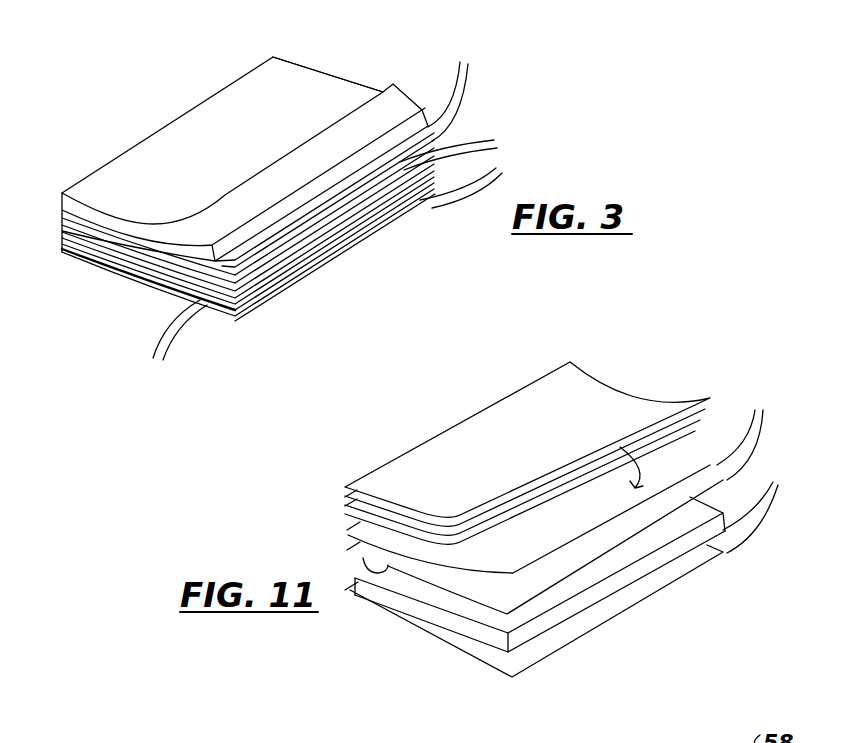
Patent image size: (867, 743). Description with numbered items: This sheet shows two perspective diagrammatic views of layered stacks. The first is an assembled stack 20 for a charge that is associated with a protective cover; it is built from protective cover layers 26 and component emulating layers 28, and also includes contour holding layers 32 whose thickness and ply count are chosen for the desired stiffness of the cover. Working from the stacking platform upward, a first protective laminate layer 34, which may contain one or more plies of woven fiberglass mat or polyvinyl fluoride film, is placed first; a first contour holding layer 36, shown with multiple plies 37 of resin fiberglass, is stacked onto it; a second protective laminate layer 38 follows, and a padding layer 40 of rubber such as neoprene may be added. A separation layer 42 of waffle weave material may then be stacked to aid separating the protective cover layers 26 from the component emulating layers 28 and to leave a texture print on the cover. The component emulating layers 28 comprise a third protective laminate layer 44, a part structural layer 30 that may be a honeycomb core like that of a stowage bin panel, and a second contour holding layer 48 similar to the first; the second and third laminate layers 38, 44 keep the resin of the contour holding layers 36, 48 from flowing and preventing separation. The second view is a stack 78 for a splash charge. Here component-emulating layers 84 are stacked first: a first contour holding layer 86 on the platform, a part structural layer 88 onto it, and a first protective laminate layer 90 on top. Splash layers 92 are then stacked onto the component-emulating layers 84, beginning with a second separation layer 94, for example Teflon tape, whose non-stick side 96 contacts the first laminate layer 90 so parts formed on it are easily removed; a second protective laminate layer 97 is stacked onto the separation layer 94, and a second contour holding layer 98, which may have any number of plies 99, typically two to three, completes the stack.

In FIG. 3, the assembled stack 20 is at (172, 120).
In FIG. 3, the protective cover layers 26 is at (494, 142).
In FIG. 3, the component emulating layers 28 is at (394, 85).
In FIG. 3, the part structural layer 30 is at (160, 250).
In FIG. 3, the contour holding layers 32 is at (295, 83).
In FIG. 3, the first protective laminate layer 34 is at (357, 250).
In FIG. 3, the first contour holding layer 36 is at (260, 303).
In FIG. 3, the plies 37 is at (297, 283).
In FIG. 3, the second protective laminate layer 38 is at (322, 227).
In FIG. 3, the padding layer 40 is at (373, 180).
In FIG. 3, the separation layer 42 is at (424, 203).
In FIG. 3, the third protective laminate layer 44 is at (230, 263).
In FIG. 3, the second contour holding layer 48 is at (80, 208).
In FIG. 11, the stack 78 is at (485, 408).
In FIG. 11, the component-emulating layers 84 is at (745, 478).
In FIG. 11, the first contour holding layer 86 is at (703, 568).
In FIG. 11, the part structural layer 88 is at (633, 577).
In FIG. 11, the first protective laminate layer 90 is at (560, 602).
In FIG. 11, the splash layers 92 is at (713, 397).
In FIG. 11, the second separation layer 94 is at (480, 598).
In FIG. 11, the non-stick side 96 is at (363, 558).
In FIG. 11, the second protective laminate layer 97 is at (450, 562).
In FIG. 11, the second contour holding layer 98 is at (703, 397).
In FIG. 11, the plies 99 is at (573, 476).